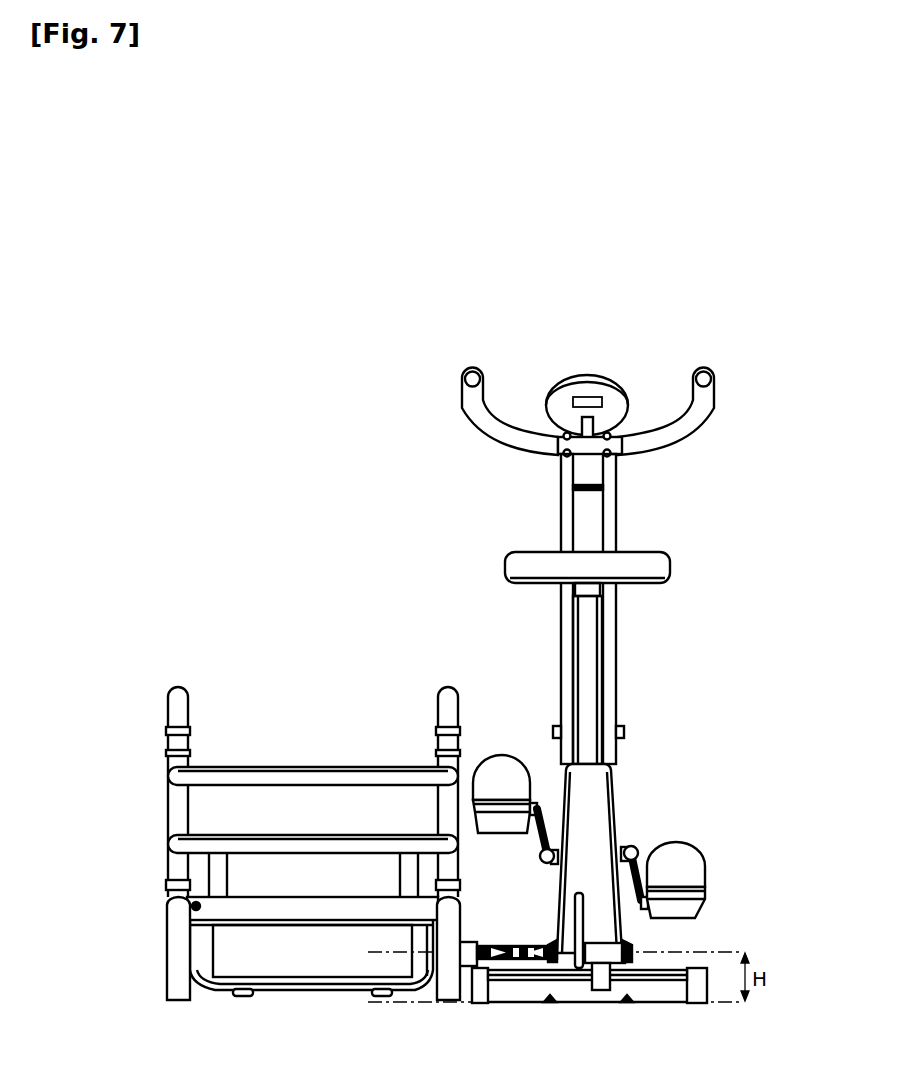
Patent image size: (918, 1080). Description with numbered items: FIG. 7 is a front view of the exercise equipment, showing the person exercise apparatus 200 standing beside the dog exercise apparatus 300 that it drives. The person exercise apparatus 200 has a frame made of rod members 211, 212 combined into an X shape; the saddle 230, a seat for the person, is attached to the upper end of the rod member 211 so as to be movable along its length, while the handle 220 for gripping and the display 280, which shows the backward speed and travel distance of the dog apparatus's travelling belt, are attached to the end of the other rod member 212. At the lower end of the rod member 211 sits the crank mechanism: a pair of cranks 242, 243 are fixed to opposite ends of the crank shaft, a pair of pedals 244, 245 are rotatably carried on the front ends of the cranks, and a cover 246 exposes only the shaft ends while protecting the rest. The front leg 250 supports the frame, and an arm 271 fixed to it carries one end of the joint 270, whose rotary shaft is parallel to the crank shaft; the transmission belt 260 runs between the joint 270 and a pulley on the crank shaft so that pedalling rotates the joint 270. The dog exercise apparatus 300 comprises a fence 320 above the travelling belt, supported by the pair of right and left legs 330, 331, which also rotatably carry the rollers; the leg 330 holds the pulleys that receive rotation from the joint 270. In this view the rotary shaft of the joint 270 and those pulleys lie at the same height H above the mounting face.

The person exercise apparatus 200 is at (733, 339).
The display 280 is at (590, 382).
The handle 220 is at (687, 430).
The saddle 230 is at (650, 572).
The rod member 212 is at (608, 627).
The rod member 211 is at (588, 650).
The cover 246 is at (592, 783).
The pedal 244 is at (502, 783).
The crank 242 is at (538, 852).
The crank 243 is at (632, 848).
The pedal 245 is at (698, 910).
The joint 270 is at (518, 943).
The transmission belt 260 is at (588, 926).
The leg 250 is at (648, 985).
The arm 271 is at (600, 990).
The dog exercise apparatus 300 is at (302, 669).
The fence 320 is at (446, 690).
The leg 331 is at (182, 985).
The leg 330 is at (452, 985).